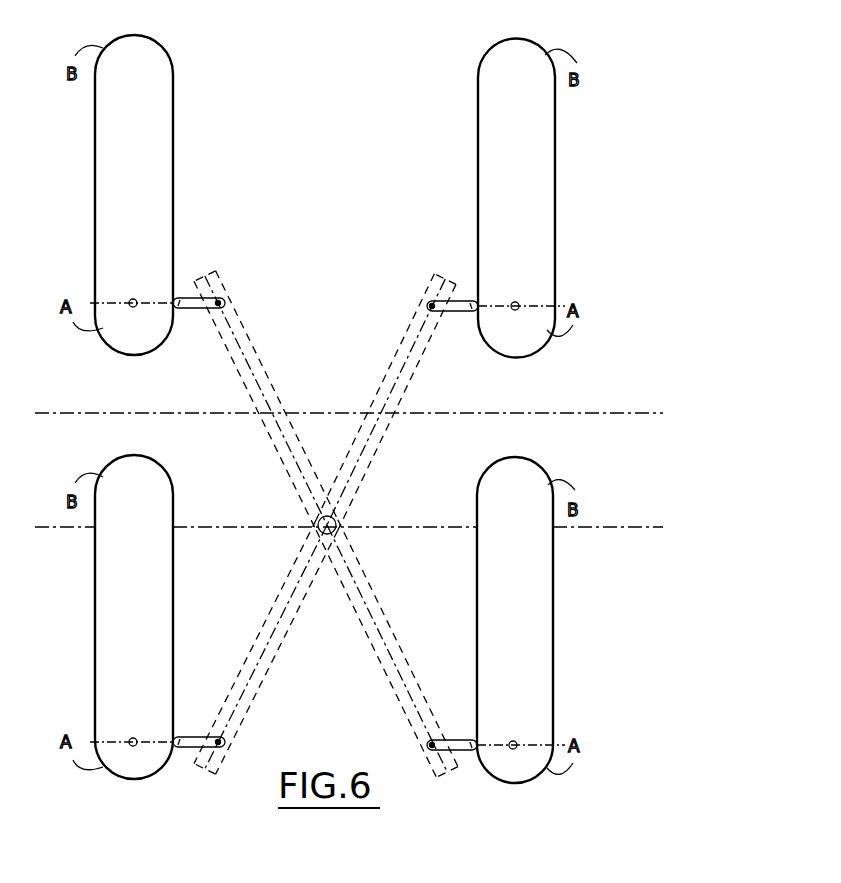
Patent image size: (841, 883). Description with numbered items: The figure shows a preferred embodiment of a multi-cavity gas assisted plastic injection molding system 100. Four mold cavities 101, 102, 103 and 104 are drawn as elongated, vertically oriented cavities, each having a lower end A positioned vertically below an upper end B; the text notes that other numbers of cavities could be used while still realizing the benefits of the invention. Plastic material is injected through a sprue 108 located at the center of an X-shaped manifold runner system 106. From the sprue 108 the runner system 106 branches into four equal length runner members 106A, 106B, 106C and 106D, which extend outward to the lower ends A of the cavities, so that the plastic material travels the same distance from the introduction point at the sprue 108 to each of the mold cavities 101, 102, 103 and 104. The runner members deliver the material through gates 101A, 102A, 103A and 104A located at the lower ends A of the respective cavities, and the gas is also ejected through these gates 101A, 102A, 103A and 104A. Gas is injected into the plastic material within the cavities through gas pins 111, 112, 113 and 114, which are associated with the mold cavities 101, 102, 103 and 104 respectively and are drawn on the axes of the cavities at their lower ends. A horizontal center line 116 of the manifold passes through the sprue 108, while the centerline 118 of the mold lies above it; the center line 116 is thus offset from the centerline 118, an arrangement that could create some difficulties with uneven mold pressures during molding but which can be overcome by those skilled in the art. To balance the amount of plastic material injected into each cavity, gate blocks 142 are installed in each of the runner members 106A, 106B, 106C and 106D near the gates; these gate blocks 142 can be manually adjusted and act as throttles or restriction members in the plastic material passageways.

The multi-cavity gas assisted plastic injection molding system 100 is at (688, 303).
The mold cavity 101 is at (173, 165).
The gate 101A is at (173, 302).
The mold cavity 102 is at (555, 170).
The gate 102A is at (478, 303).
The mold cavity 103 is at (170, 597).
The gate 103A is at (177, 750).
The mold cavity 104 is at (550, 608).
The gate 104A is at (477, 750).
The manifold runner system 106 is at (335, 524).
The runner member 106A is at (257, 330).
The runner member 106B is at (398, 425).
The runner member 106C is at (263, 690).
The runner member 106D is at (411, 621).
The sprue 108 is at (345, 512).
The gas pin 111 is at (132, 300).
The gas pin 112 is at (517, 302).
The gas pin 113 is at (132, 740).
The gas pin 114 is at (517, 740).
The center line of the manifold 116 is at (629, 527).
The centerline of the mold 118 is at (592, 413).
The gate block 142 is at (190, 310).